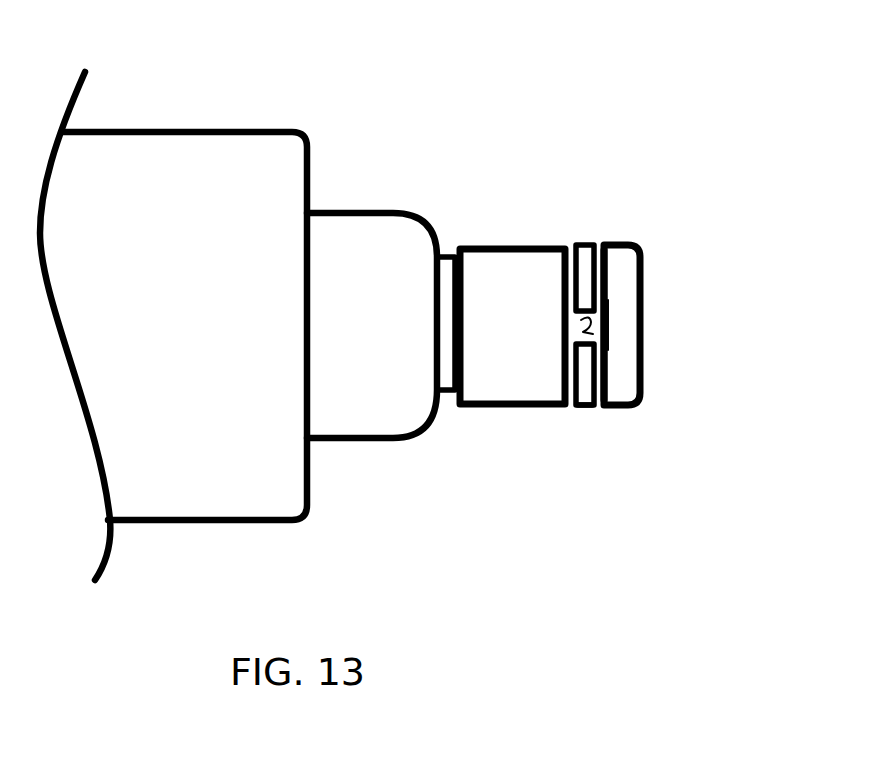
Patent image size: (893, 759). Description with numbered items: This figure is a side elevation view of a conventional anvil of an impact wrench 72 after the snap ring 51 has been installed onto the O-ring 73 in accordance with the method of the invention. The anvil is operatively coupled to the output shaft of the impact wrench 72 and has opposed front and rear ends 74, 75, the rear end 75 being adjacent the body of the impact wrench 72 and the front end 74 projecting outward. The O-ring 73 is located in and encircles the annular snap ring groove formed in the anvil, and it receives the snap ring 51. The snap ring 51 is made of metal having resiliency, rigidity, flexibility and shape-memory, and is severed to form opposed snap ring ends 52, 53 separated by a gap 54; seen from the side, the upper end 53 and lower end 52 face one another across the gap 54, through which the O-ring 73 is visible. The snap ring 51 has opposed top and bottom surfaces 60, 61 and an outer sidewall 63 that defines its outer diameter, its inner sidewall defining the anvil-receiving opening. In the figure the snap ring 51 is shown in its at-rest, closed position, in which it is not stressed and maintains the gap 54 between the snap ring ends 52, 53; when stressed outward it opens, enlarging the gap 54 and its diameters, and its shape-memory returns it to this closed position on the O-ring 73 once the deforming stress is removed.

The impact wrench 72 is at (175, 172).
The rear end 75 is at (455, 253).
The top surface 60 is at (565, 280).
The snap ring 51 is at (553, 311).
The snap ring end 53 is at (565, 317).
The snap ring end 52 is at (565, 333).
The O-ring 73 is at (576, 326).
The outer sidewall 63 is at (583, 392).
The bottom surface 61 is at (610, 280).
The gap 54 is at (607, 323).
The front end 74 is at (693, 299).